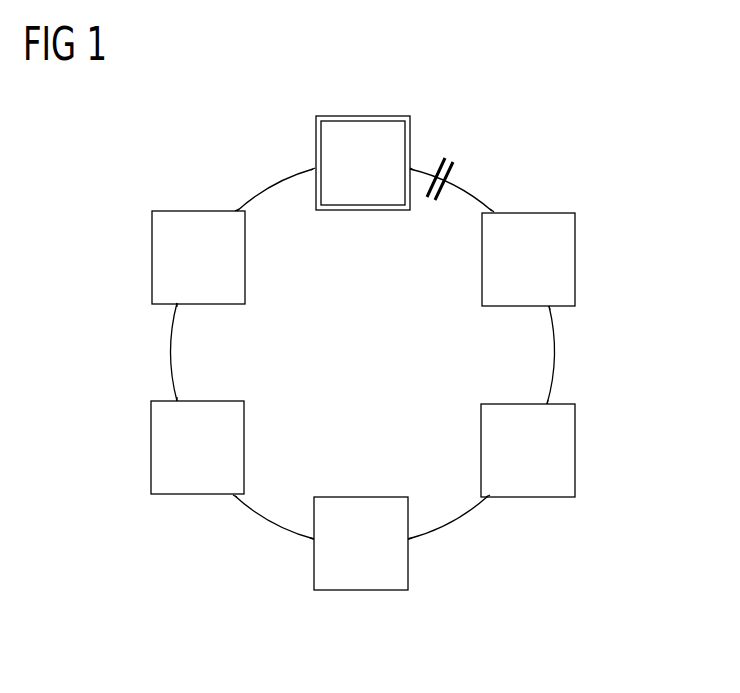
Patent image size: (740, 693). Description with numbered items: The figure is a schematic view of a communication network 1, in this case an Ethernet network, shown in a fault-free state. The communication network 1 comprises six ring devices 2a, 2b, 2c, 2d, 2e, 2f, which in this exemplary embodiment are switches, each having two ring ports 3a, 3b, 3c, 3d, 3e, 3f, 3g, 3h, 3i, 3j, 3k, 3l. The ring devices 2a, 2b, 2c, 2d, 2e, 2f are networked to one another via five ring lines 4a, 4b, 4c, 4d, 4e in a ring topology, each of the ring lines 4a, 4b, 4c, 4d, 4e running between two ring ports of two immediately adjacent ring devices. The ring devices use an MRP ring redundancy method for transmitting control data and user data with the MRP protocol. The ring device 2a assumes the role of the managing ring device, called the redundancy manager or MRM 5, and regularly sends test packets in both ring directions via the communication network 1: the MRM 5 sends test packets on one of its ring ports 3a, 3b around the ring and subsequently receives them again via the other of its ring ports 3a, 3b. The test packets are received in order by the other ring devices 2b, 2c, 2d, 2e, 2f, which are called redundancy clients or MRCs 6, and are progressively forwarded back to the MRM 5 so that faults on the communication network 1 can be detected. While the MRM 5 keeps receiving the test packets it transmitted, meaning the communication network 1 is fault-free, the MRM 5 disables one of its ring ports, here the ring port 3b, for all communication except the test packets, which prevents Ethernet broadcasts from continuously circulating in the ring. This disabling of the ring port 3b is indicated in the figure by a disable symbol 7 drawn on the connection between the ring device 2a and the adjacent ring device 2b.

The communication network 1 is at (187, 121).
The ring device 2a is at (363, 117).
The ring device 2b is at (575, 261).
The ring device 2c is at (575, 448).
The ring device 2d is at (361, 590).
The ring device 2e is at (151, 447).
The ring device 2f is at (151, 258).
The redundancy manager (MRM) 5 is at (363, 124).
The redundancy client (MRC) 6 is at (364, 440).
The disable symbol 7 is at (458, 170).
The ring port 3a is at (313, 170).
The ring port 3b is at (412, 168).
The ring port 3c is at (492, 210).
The ring port 3d is at (549, 308).
The ring port 3e is at (549, 402).
The ring port 3f is at (488, 497).
The ring port 3g is at (408, 540).
The ring port 3h is at (314, 540).
The ring port 3i is at (235, 497).
The ring port 3j is at (177, 400).
The ring port 3k is at (177, 306).
The ring port 3l is at (235, 209).
The ring line 4a is at (553, 353).
The ring line 4b is at (453, 522).
The ring line 4c is at (273, 522).
The ring line 4d is at (172, 353).
The ring line 4e is at (269, 185).